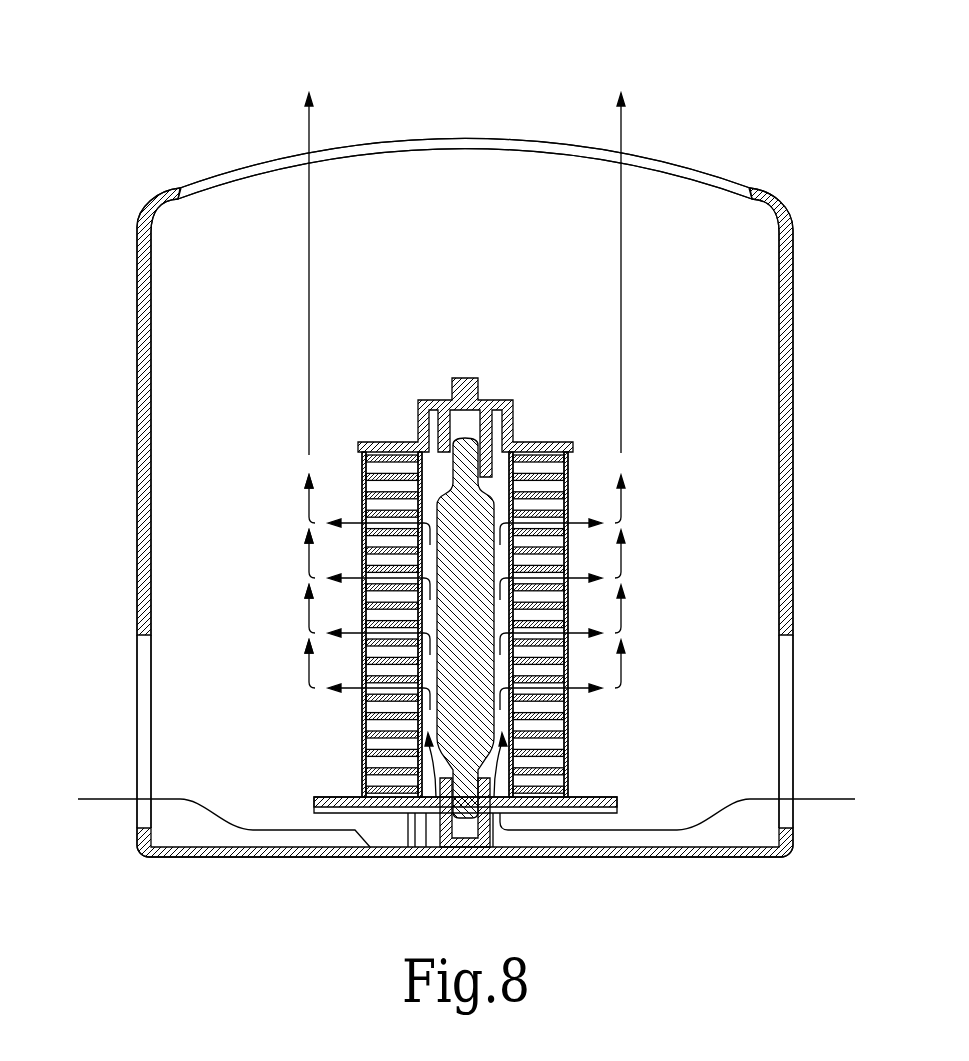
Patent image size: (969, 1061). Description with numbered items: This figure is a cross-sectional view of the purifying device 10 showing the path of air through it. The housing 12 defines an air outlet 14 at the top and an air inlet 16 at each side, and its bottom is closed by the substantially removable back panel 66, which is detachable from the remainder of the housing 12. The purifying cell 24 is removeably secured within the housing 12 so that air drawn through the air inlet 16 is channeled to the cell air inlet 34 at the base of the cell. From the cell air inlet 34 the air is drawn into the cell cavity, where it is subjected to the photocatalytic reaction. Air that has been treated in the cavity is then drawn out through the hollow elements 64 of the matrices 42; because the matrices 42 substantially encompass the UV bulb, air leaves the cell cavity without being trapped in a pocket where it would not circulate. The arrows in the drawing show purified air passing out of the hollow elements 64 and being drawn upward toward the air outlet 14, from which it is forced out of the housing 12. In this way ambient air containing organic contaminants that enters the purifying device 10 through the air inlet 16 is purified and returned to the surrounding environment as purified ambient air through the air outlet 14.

The purifying device 10 is at (764, 95).
The housing 12 is at (793, 276).
The air outlet 14 is at (377, 150).
The air inlet 16 is at (144, 706).
The purifying cell 24 is at (523, 362).
The cell air inlet 34 is at (428, 858).
The matrices 42 is at (363, 487).
The hollow elements 64 is at (380, 667).
The back panel 66 is at (722, 858).